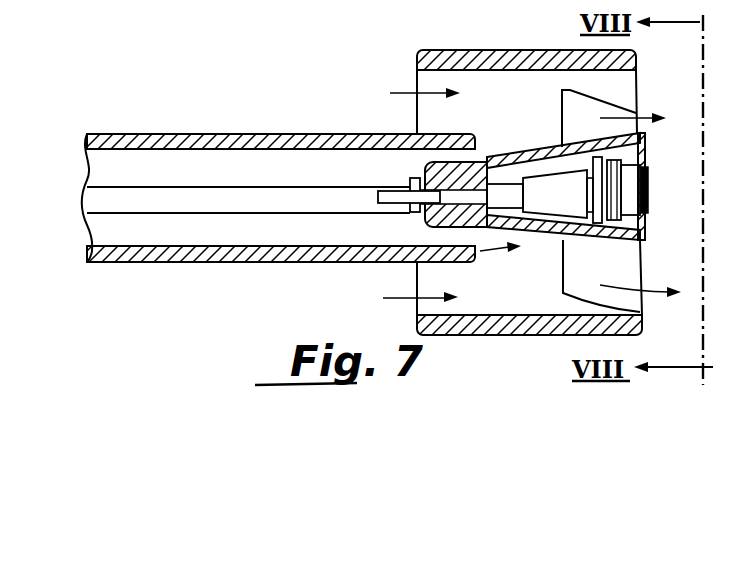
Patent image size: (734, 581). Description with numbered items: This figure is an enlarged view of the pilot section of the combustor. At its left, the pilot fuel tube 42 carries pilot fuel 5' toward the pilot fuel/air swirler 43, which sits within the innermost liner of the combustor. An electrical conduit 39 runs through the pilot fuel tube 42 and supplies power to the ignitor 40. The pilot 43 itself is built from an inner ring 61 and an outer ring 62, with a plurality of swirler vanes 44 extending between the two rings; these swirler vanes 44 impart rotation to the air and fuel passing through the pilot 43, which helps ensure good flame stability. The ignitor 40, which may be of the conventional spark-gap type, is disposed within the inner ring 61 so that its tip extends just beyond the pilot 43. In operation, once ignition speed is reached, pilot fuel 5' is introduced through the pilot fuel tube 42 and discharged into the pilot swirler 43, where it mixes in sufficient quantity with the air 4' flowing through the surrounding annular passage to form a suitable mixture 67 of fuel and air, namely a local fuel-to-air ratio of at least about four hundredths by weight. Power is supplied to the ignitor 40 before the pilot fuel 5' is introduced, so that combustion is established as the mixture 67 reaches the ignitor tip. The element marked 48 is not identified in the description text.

The electrical conduit 39 is at (289, 192).
The pilot fuel tube 42 is at (296, 263).
The pilot fuel/air swirler 43 is at (477, 50).
The outer ring 62 is at (560, 50).
The swirler vanes 44 is at (600, 105).
The connector body 48 is at (485, 140).
The inner ring 61 is at (588, 240).
The ignitor 40 is at (632, 200).
The mixture of fuel and air 67 is at (660, 120).
The air 4' is at (419, 172).
The pilot fuel 5' is at (500, 270).